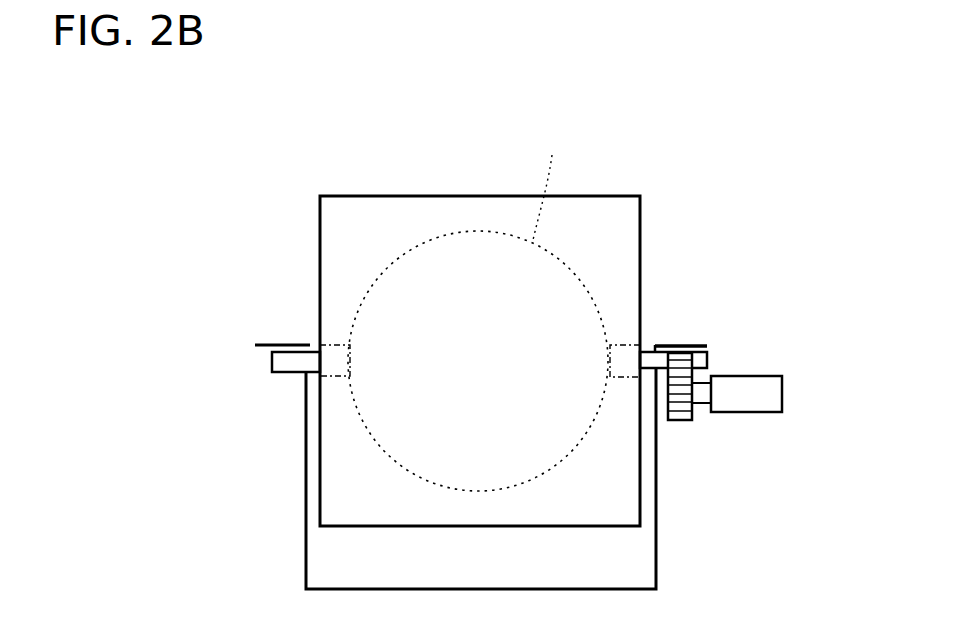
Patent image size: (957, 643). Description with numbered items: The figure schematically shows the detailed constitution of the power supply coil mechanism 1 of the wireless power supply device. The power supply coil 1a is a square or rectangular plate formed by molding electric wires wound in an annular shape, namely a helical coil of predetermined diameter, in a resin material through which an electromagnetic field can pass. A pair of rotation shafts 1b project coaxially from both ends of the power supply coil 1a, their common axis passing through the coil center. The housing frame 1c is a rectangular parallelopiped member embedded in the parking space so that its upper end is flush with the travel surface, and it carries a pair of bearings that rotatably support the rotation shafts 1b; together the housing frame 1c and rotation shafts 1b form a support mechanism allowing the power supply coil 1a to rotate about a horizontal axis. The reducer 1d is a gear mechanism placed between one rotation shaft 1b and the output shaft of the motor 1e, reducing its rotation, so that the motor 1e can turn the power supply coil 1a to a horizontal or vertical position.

The power supply coil mechanism 1 is at (702, 128).
The power supply coil 1a is at (330, 345).
The rotation shaft 1b is at (310, 345).
The housing frame 1c is at (303, 465).
The reducer 1d is at (680, 423).
The motor 1e is at (743, 413).